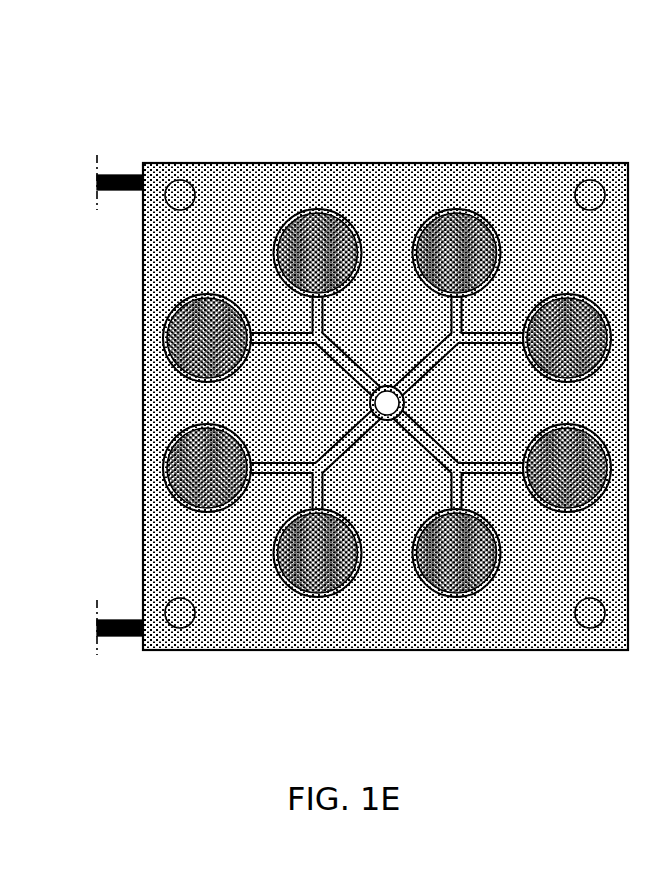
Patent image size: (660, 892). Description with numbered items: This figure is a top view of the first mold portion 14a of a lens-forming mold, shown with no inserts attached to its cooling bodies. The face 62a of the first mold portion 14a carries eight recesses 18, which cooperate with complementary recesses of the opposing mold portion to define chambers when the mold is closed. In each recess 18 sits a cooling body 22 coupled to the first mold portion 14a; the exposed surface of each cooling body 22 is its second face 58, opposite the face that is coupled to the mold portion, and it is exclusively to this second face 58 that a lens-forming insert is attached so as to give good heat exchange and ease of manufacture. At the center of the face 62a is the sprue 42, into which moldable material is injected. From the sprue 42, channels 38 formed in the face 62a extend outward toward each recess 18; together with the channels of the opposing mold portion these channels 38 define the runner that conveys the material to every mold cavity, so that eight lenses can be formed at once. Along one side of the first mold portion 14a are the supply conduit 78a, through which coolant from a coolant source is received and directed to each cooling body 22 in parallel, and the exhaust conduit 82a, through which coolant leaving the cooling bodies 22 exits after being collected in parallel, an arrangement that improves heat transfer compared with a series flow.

The first mold portion 14a is at (131, 72).
The recess 18 is at (425, 217).
The cooling body 22 is at (458, 245).
The channel 38 is at (283, 338).
The sprue 42 is at (387, 405).
The second face 58 is at (205, 463).
The face 62a is at (505, 627).
The supply conduit 78a is at (119, 192).
The exhaust conduit 82a is at (119, 637).